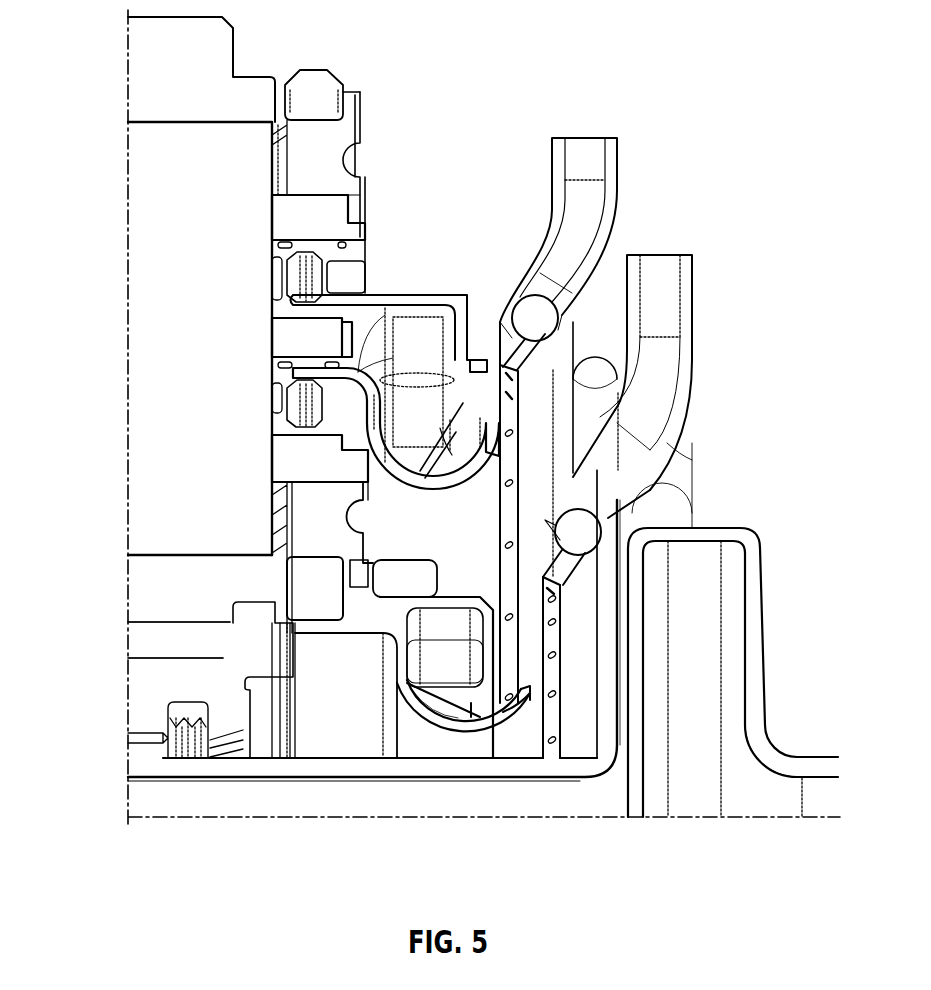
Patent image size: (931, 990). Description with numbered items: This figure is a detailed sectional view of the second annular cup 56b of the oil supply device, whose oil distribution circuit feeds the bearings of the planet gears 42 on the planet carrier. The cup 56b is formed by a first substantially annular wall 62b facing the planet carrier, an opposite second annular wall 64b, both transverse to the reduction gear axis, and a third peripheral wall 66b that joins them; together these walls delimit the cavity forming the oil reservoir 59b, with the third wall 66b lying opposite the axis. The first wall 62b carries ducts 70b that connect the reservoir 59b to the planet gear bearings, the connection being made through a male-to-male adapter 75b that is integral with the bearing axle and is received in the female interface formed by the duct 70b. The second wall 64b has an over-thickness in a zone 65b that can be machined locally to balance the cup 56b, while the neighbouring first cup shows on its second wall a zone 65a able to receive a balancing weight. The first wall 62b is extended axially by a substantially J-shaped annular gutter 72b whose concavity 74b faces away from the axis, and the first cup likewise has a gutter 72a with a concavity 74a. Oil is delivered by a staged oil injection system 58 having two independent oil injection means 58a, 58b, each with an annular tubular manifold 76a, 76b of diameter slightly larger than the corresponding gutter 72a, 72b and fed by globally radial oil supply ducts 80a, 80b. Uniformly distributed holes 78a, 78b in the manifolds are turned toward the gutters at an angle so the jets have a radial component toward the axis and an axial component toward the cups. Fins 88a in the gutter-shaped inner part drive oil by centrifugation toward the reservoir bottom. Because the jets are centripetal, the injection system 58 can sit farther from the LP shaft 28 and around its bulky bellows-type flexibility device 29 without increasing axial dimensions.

The LP shaft 28 is at (767, 788).
The flexibility device 29 is at (693, 594).
The planet gears 42 is at (143, 583).
The second annular cup 56b is at (438, 293).
The oil injection system 58 is at (655, 229).
The first oil injection means 58a is at (684, 392).
The second oil injection means 58b is at (618, 204).
The oil reservoir 59b is at (420, 403).
The first wall 62b is at (377, 407).
The second wall 64b is at (573, 325).
The balancing weight zone 65a is at (497, 629).
The over-thickness zone 65b is at (574, 370).
The third peripheral wall 66b is at (413, 293).
The ducts 70b is at (353, 318).
The gutter 72a is at (500, 735).
The gutter 72b is at (478, 479).
The concavity 74a is at (473, 727).
The concavity 74b is at (455, 432).
The male-to-male adapter 75b is at (347, 248).
The annular tubular manifold 76a is at (580, 735).
The annular tubular manifold 76b is at (537, 392).
The holes 78a is at (556, 694).
The holes 78b is at (512, 433).
The oil supply duct 80a is at (688, 272).
The oil supply duct 80b is at (610, 153).
The fins 88a is at (433, 703).